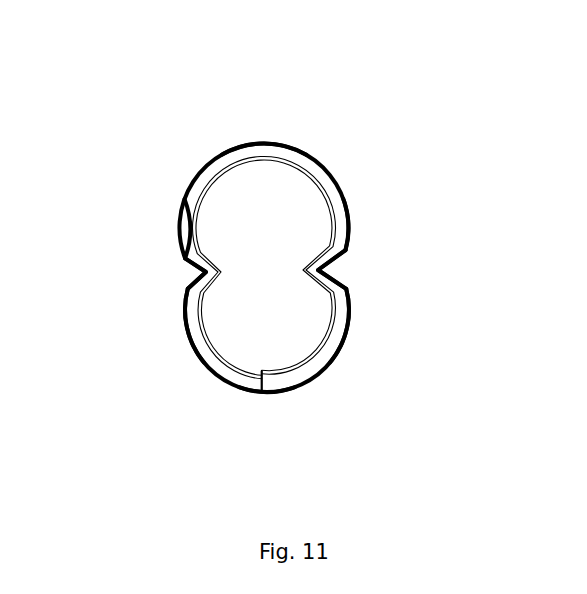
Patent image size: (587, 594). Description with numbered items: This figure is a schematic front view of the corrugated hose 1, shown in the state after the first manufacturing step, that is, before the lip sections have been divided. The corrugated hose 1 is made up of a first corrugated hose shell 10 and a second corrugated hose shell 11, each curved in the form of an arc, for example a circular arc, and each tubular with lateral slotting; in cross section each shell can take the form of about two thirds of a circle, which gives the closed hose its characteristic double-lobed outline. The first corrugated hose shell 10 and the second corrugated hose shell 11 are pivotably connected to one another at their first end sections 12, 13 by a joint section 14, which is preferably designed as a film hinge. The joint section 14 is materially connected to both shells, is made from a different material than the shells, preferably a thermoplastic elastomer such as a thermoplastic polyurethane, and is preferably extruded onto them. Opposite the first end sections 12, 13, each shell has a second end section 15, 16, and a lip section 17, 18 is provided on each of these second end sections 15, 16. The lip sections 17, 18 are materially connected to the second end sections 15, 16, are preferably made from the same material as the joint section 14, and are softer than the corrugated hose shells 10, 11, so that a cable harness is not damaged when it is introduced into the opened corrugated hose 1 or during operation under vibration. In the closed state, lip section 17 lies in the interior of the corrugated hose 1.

The corrugated hose 1 is at (247, 84).
The first corrugated hose shell 10 is at (236, 376).
The second corrugated hose shell 11 is at (300, 152).
The first end section 12 is at (334, 310).
The first end section 13 is at (340, 243).
The joint section 14 is at (320, 270).
The second end section 15 is at (186, 315).
The second end section 16 is at (180, 240).
The lip section 17 is at (114, 273).
The lip section 18 is at (184, 276).